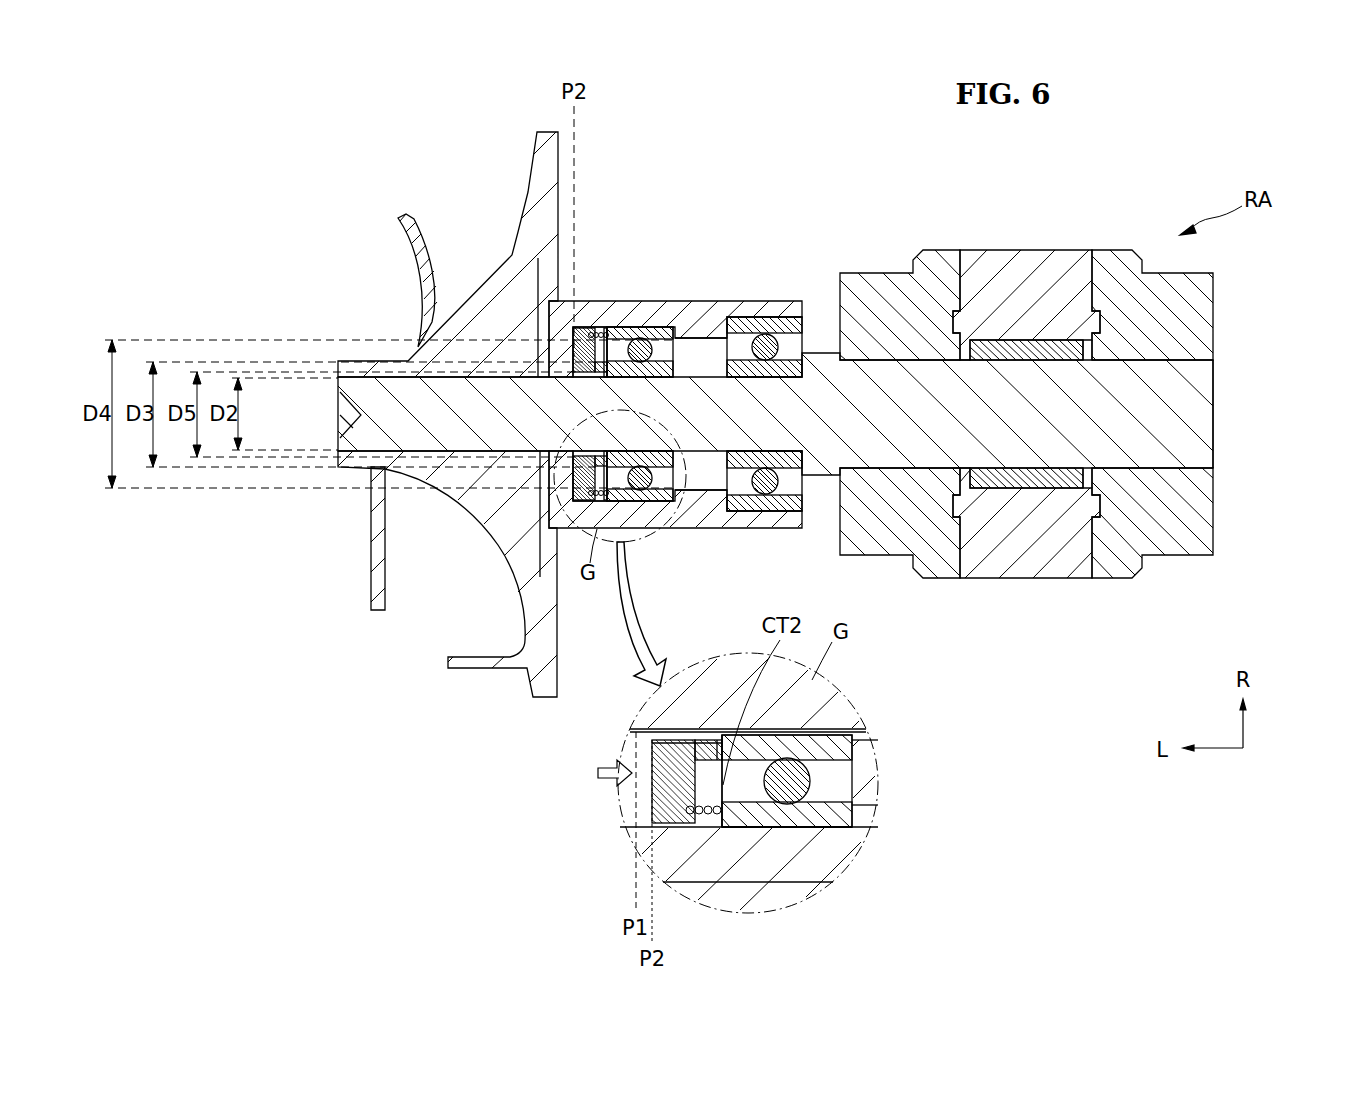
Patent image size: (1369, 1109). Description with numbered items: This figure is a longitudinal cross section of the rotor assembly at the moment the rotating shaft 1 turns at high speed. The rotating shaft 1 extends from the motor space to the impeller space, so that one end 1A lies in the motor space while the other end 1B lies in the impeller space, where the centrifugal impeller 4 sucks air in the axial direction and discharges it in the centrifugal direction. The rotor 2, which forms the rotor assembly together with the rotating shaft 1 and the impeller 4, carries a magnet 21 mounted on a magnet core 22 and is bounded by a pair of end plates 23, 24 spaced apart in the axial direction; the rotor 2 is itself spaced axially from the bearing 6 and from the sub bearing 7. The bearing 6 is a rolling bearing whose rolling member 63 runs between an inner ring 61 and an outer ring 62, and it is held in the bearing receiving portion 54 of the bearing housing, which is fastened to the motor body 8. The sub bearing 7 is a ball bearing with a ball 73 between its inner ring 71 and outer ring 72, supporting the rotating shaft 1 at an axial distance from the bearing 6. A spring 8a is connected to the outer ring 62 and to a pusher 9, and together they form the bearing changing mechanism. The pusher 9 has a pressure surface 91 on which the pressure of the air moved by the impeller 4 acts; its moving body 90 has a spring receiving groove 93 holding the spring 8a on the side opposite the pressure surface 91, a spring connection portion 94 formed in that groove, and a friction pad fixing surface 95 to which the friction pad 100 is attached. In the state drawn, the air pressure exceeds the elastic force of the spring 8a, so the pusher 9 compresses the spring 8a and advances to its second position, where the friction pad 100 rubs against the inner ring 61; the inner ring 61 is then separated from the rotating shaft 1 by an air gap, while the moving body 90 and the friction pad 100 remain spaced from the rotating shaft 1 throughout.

The rotating shaft 1 is at (786, 414).
The one end of the rotating shaft 1A is at (1224, 400).
The other end of the rotating shaft 1B is at (338, 410).
The rotor 2 is at (1026, 465).
The magnet 21 is at (999, 562).
The magnet core 22 is at (1042, 490).
The end plate 23 is at (942, 562).
The end plate 24 is at (1152, 444).
The impeller 4 is at (573, 343).
The bearing receiving portion 54 is at (706, 318).
The bearing 6 is at (670, 329).
The inner ring 61 is at (661, 362).
The outer ring 62 is at (620, 330).
The rolling member 63 is at (642, 340).
The sub bearing 7 is at (812, 318).
The inner ring 71 is at (779, 320).
The outer ring 72 is at (759, 363).
The ball 73 is at (770, 343).
The motor body 8 is at (707, 812).
The spring 8a is at (593, 334).
The pusher 9 is at (514, 303).
The moving body 90 is at (605, 345).
The pressure surface 91 is at (655, 802).
The spring receiving groove 93 is at (740, 828).
The spring connection portion 94 is at (683, 812).
The friction pad fixing surface 95 is at (656, 742).
The friction pad 100 is at (578, 350).